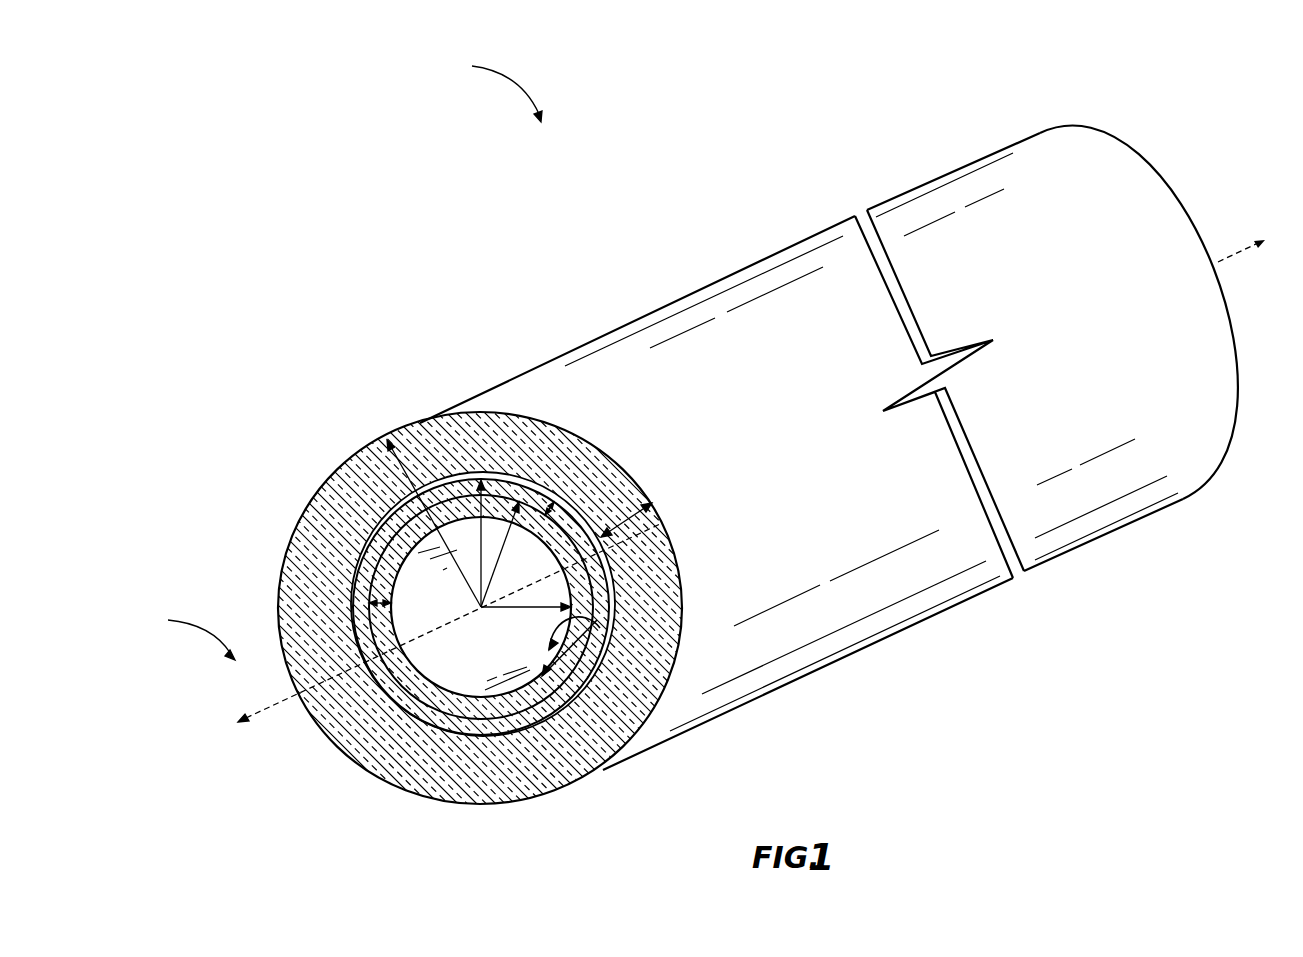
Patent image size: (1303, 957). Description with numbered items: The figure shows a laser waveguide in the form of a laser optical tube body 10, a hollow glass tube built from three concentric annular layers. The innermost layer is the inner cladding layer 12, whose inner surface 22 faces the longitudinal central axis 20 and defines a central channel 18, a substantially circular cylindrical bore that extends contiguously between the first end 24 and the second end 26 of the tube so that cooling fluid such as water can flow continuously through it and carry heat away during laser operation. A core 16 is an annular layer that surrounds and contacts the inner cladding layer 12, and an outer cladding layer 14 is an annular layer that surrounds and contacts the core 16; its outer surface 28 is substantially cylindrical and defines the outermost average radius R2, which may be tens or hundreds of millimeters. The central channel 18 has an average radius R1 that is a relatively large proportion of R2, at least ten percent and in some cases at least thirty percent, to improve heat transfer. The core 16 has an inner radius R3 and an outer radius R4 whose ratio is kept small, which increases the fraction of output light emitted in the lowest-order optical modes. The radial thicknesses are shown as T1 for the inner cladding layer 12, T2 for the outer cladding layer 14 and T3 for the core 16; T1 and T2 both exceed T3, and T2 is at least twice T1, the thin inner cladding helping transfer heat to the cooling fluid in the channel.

The laser optical tube body 10 is at (491, 86).
The inner cladding layer 12 is at (478, 713).
The outer cladding layer 14 is at (517, 790).
The core 16 is at (533, 717).
The central channel 18 is at (557, 717).
The longitudinal central axis 20 is at (263, 712).
The inner surface 22 is at (600, 628).
The first end 24 is at (185, 630).
The second end 26 is at (1158, 109).
The outer surface 28 is at (685, 350).
The average radius of central channel R1 is at (580, 583).
The outermost average radius R2 is at (408, 450).
The inner radius of core R3 is at (505, 553).
The outer radius of core R4 is at (481, 572).
The inner cladding layer thickness T1 is at (375, 603).
The outer cladding layer thickness T2 is at (630, 498).
The core thickness T3 is at (553, 500).